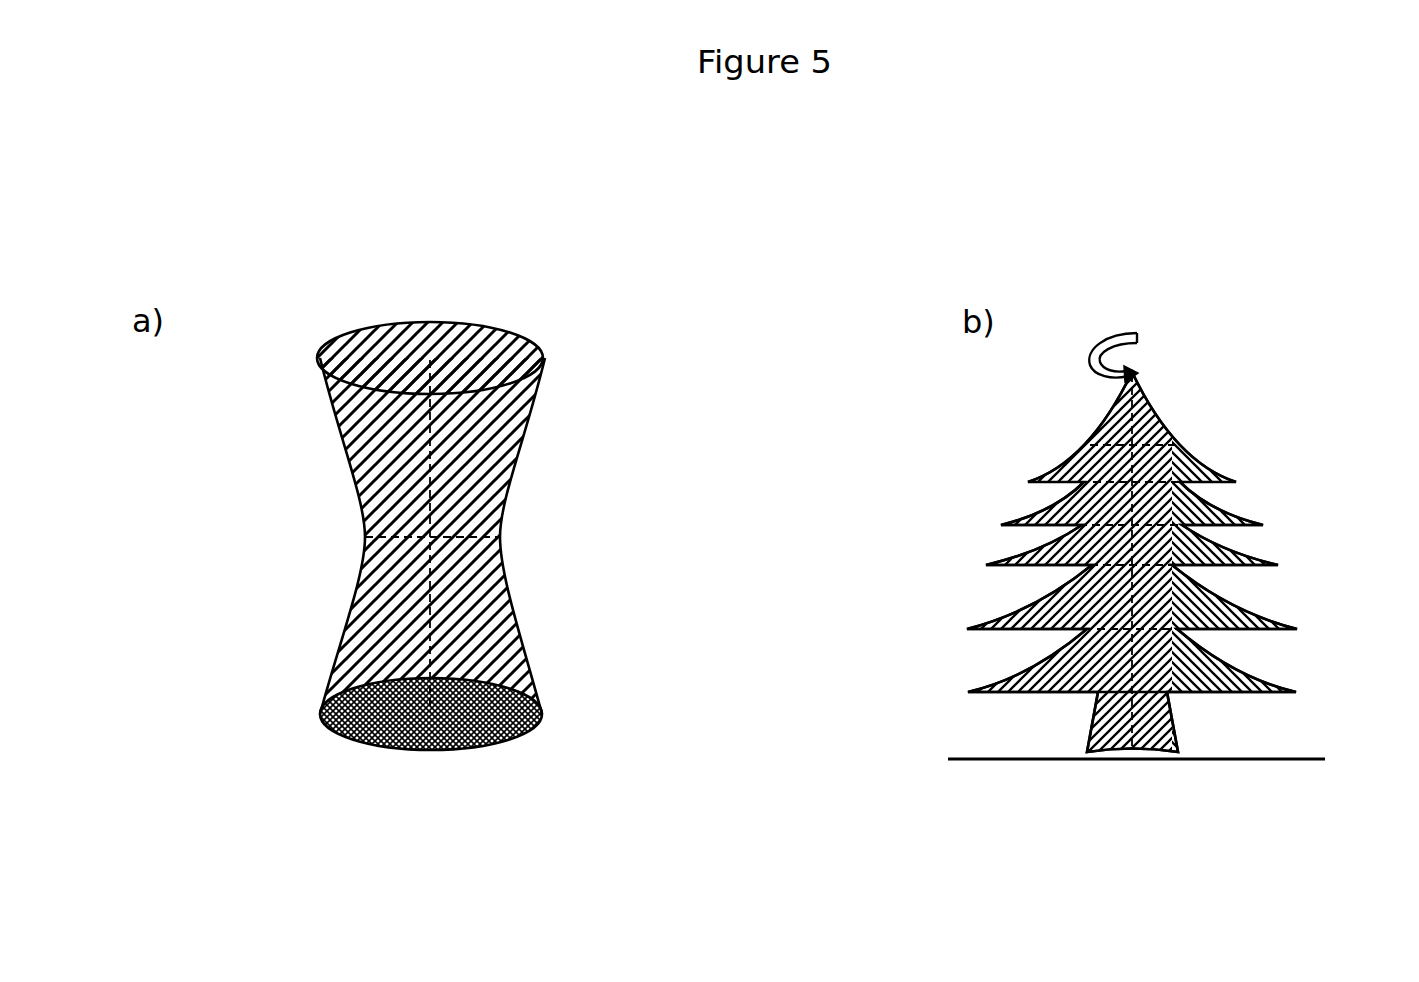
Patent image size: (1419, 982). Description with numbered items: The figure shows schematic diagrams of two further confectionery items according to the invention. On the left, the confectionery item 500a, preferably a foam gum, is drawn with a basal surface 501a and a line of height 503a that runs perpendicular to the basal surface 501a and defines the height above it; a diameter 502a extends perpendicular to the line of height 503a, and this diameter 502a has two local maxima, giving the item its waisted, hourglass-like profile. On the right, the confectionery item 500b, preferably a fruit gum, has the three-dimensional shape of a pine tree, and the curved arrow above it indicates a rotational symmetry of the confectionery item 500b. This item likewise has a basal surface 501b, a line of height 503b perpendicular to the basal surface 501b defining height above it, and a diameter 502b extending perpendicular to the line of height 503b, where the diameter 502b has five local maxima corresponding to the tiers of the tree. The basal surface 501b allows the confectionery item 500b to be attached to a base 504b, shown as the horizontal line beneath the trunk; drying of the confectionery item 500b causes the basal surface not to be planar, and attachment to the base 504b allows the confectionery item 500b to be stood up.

The confectionery item 500a is at (458, 222).
The basal surface 501a is at (543, 713).
The diameter 502a is at (500, 537).
The line of height 503a is at (443, 462).
The confectionery item 500b is at (1158, 200).
The basal surface 501b is at (1185, 752).
The diameter 502b is at (1258, 522).
The line of height 503b is at (1168, 428).
The base 504b is at (991, 762).